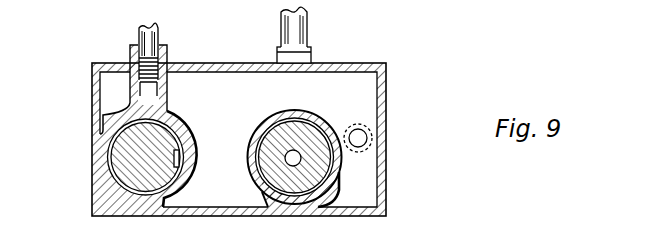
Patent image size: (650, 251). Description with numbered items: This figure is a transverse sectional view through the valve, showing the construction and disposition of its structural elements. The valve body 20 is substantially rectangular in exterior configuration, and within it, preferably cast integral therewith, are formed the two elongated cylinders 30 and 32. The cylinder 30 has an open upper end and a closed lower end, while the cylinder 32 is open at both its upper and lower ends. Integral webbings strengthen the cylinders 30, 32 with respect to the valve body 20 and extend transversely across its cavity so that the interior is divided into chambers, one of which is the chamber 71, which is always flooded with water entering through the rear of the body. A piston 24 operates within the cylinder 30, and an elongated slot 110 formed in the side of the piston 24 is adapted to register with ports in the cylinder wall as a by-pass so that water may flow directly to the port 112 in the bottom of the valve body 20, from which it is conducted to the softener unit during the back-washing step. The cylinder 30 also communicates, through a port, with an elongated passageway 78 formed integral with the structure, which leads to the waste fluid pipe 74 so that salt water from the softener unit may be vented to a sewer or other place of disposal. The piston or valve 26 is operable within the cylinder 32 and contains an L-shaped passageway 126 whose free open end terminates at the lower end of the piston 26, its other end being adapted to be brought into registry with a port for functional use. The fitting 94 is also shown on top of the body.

The valve body 20 is at (263, 137).
The chamber 71 is at (366, 96).
The waste fluid pipe 74 is at (139, 38).
The elongated passageway 78 is at (146, 103).
The piston 24 is at (132, 157).
The elongated slot 110 is at (180, 157).
The cylinder 30 is at (168, 200).
The lubrication fitting 94 is at (303, 33).
The piston 26 is at (275, 134).
The L-shaped passageway 126 is at (293, 160).
The cylinder 32 is at (357, 195).
The port 112 is at (364, 138).